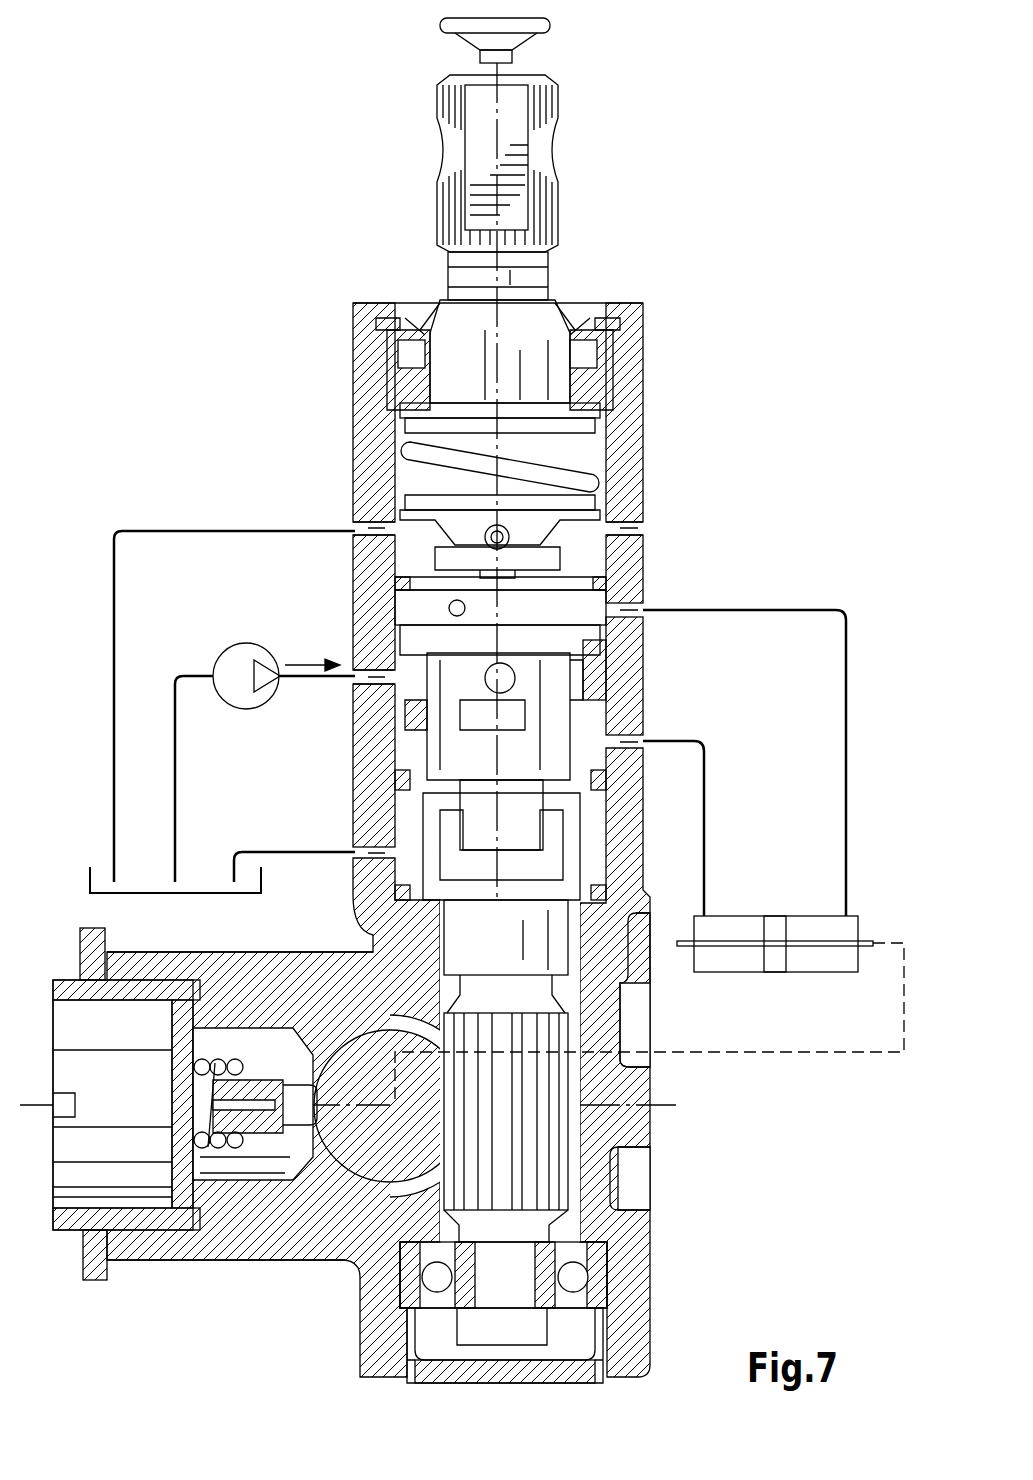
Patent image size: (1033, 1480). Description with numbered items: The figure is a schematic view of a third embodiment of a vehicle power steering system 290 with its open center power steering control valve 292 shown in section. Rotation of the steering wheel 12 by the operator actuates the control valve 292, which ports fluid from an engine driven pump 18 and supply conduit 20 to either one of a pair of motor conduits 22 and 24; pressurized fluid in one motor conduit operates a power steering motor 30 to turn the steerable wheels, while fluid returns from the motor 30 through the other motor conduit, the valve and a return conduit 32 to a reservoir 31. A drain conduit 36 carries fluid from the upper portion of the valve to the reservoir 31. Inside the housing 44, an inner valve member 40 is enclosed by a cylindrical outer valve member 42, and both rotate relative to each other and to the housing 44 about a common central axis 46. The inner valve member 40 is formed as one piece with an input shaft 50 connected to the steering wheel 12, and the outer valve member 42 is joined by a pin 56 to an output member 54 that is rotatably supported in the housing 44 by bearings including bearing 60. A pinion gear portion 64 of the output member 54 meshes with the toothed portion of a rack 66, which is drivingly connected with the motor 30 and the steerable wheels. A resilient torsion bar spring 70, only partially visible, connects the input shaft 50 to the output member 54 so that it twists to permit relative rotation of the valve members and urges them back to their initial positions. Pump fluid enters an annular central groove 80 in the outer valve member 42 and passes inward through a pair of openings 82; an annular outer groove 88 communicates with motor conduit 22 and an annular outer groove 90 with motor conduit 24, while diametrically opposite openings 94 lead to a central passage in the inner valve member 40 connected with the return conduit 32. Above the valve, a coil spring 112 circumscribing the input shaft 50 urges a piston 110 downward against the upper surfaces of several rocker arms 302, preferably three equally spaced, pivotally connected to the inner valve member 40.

The steering wheel 12 is at (540, 20).
The common central axis 46 is at (497, 107).
The input shaft 50 is at (512, 200).
The power steering control valve 292 is at (587, 300).
The vehicle power steering system 290 is at (690, 290).
The housing 44 is at (633, 360).
The coil spring 112 is at (580, 470).
The piston 110 is at (600, 510).
The rocker arms 302 is at (590, 530).
The annular outer groove 88 is at (617, 592).
The motor conduit 22 is at (807, 608).
The openings 82 is at (617, 655).
The annular central groove 80 is at (620, 690).
The inner valve member 40 is at (540, 715).
The openings 94 is at (490, 692).
The motor conduit 24 is at (704, 775).
The annular outer groove 90 is at (615, 752).
The torsion bar spring 70 is at (523, 838).
The output member 54 is at (545, 950).
The power steering motor 30 is at (790, 972).
The pinion gear portion 64 is at (570, 1160).
The bearing 60 is at (573, 1277).
The rack 66 is at (373, 1133).
The drain conduit 36 is at (205, 531).
The pump 18 is at (246, 710).
The supply conduit 20 is at (312, 682).
The outer valve member 42 is at (407, 672).
The pin 56 is at (410, 823).
The reservoir 31 is at (90, 867).
The return conduit 32 is at (319, 855).